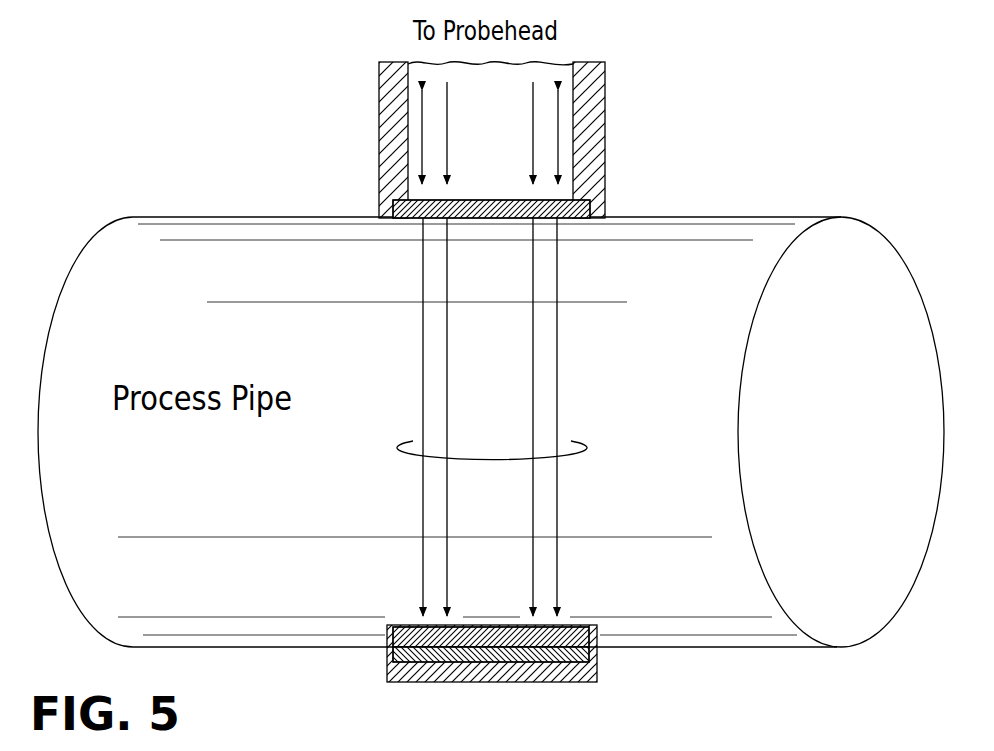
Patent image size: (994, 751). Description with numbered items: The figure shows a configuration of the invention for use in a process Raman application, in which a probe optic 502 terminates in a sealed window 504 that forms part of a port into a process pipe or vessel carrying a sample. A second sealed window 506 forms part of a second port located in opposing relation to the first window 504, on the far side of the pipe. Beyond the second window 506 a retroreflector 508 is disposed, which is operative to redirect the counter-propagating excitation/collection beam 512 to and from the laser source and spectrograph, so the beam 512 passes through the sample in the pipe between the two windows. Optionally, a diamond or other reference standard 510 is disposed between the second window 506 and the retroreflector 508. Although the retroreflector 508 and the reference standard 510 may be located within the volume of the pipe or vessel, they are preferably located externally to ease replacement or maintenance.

The probe optic 502 is at (605, 152).
The sealed window 504 is at (388, 207).
The second sealed window 506 is at (410, 625).
The retroreflector 508 is at (596, 668).
The reference standard 510 is at (388, 655).
The counter-propagating excitation/collection beam 512 is at (378, 483).